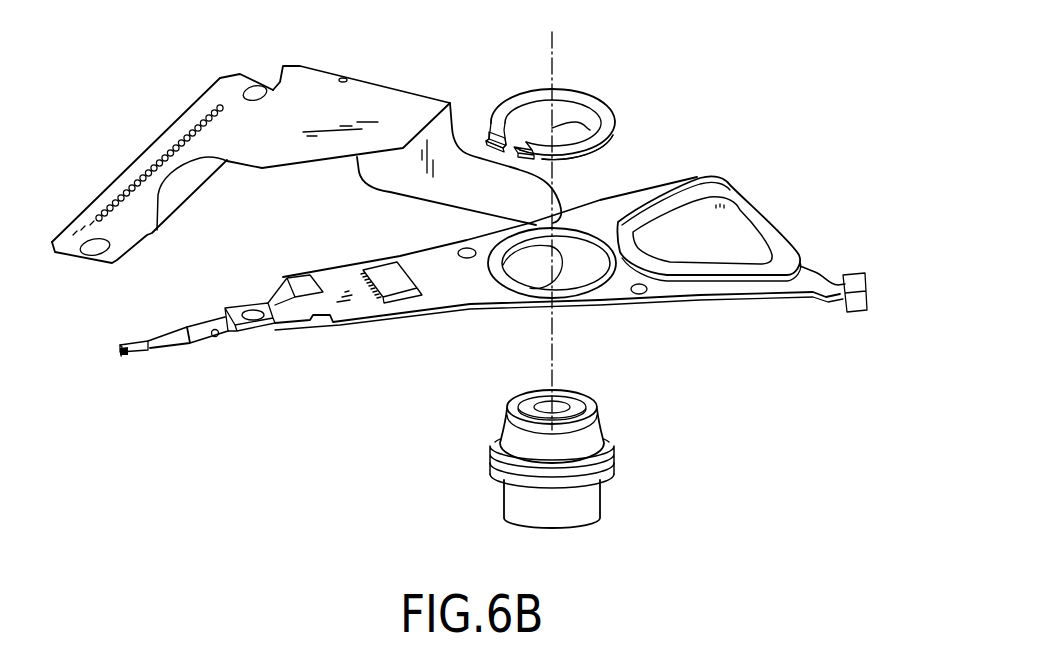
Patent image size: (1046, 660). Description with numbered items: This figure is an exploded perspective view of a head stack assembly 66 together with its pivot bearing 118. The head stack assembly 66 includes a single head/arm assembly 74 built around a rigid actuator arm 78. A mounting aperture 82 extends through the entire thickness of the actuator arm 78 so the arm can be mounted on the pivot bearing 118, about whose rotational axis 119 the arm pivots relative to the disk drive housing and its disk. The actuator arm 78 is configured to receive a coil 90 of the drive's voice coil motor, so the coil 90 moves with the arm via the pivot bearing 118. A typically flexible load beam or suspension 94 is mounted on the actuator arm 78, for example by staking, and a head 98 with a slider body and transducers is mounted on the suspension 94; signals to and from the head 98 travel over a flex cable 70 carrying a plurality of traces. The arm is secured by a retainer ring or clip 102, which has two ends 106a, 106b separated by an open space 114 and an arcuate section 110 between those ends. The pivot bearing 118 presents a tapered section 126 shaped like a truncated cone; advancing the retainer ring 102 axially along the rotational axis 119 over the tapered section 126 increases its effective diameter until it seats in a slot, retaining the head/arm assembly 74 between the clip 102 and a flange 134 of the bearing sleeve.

The head stack assembly 66 is at (303, 221).
The flex cable 70 is at (450, 107).
The head/arm assembly 74 is at (493, 314).
The actuator arm 78 is at (455, 311).
The mounting aperture 82 is at (572, 288).
The coil 90 is at (780, 220).
The suspension 94 is at (189, 348).
The head 98 is at (127, 357).
The retainer ring 102 is at (577, 90).
The end of retainer ring 106a is at (523, 128).
The end of retainer ring 106b is at (583, 129).
The arcuate section 110 is at (613, 107).
The open space 114 is at (501, 158).
The pivot bearing 118 is at (553, 459).
The rotational axis 119 is at (555, 357).
The tapered section 126 is at (603, 423).
The flange 134 is at (497, 467).